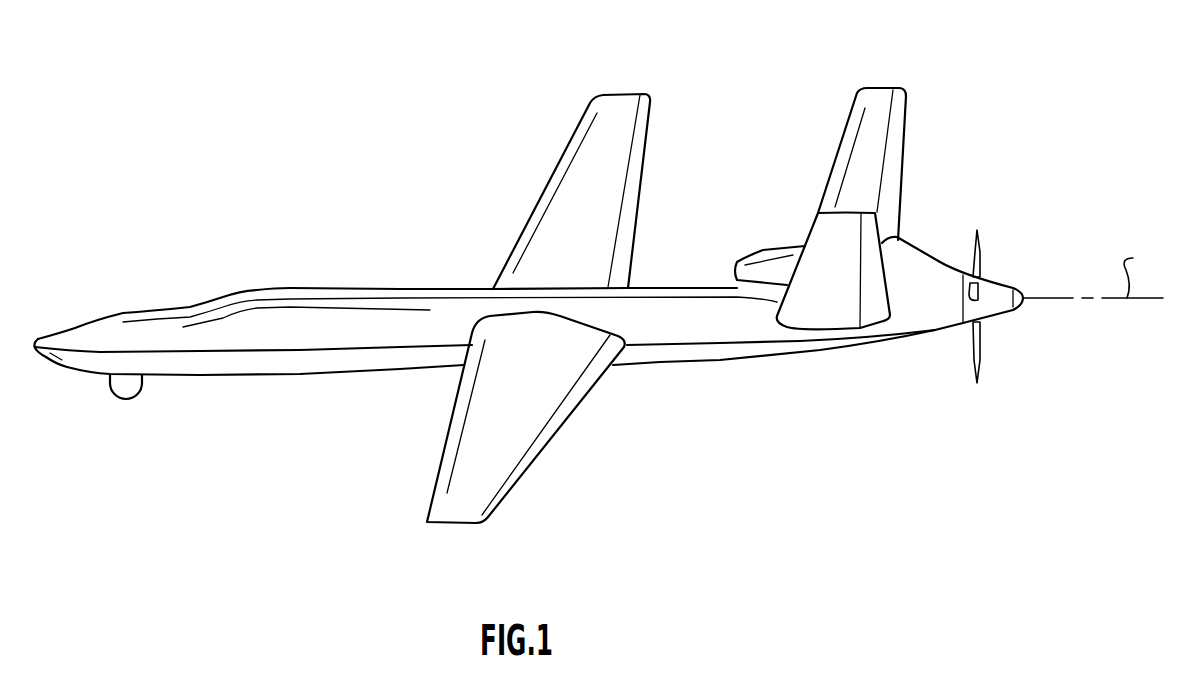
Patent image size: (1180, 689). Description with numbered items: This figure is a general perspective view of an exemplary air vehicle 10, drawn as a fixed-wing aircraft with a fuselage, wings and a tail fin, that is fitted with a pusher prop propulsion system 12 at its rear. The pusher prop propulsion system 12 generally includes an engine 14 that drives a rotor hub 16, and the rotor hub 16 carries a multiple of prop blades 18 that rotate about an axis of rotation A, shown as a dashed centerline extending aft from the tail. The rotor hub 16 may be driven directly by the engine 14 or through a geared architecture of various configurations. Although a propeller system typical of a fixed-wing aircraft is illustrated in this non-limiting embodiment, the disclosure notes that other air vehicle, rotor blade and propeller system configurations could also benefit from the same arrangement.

The air vehicle 10 is at (598, 269).
The pusher prop propulsion system 12 is at (1035, 313).
The engine 14 is at (895, 272).
The rotor hub 16 is at (995, 288).
The prop blades 18 is at (978, 236).